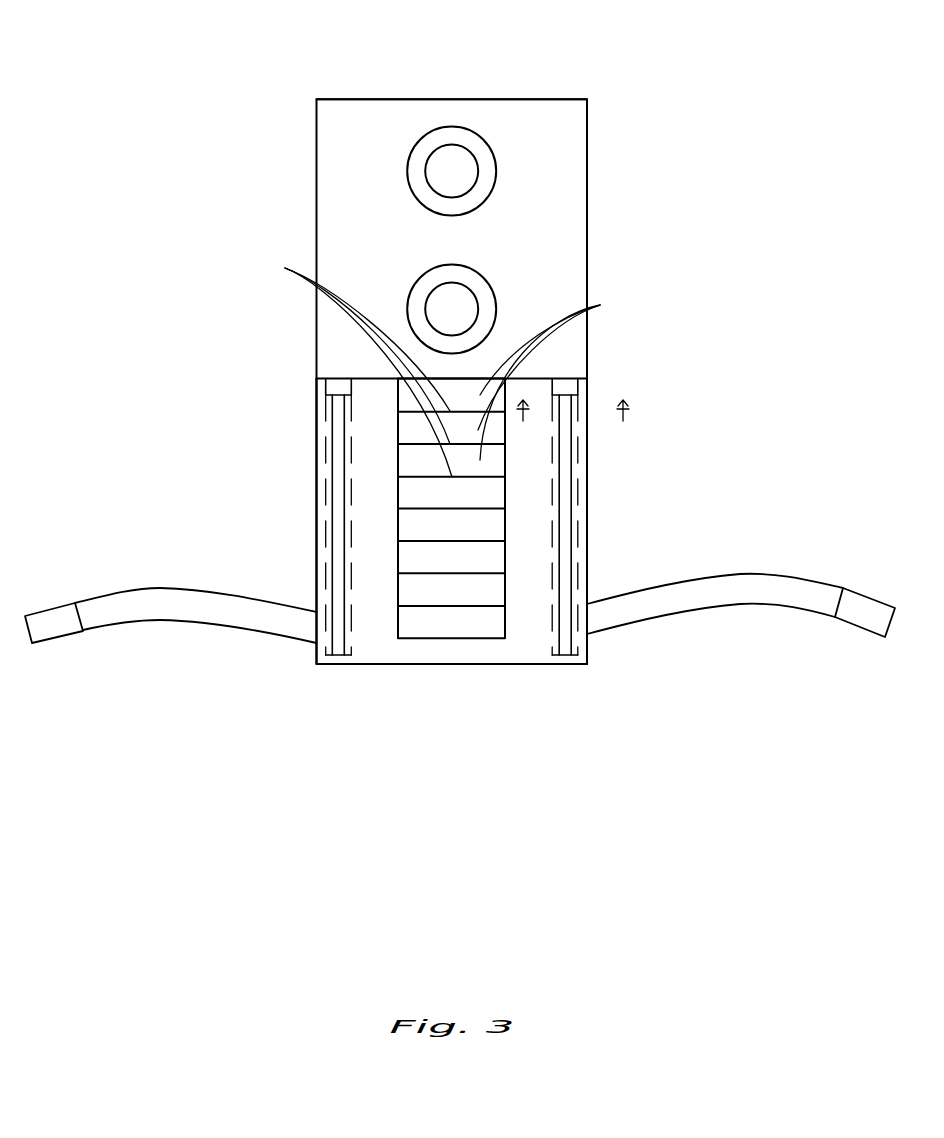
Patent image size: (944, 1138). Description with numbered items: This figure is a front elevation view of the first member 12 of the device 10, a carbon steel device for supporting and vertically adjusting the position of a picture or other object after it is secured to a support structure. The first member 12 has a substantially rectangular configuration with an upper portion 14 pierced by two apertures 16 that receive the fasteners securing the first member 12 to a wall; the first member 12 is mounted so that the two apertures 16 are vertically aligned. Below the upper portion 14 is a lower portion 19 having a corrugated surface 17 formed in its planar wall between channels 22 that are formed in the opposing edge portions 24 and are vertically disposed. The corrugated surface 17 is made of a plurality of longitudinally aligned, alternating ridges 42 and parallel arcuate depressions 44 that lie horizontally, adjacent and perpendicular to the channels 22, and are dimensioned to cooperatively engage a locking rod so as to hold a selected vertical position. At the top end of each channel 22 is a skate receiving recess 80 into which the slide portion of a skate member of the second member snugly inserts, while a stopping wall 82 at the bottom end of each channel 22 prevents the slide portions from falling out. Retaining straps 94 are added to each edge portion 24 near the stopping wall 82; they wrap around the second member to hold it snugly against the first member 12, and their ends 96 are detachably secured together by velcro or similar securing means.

The device 10 is at (584, 417).
The first member 12 is at (587, 138).
The upper portion 14 is at (338, 155).
The apertures 16 is at (453, 127).
The corrugated surface 17 is at (398, 558).
The lower portion 19 is at (587, 525).
The channels 22 is at (340, 475).
The edge portions 24 is at (316, 532).
The ridges 42 is at (285, 268).
The arcuate depressions 44 is at (600, 305).
The skate receiving recess 80 is at (330, 385).
The stopping wall 82 is at (338, 655).
The retaining straps 94 is at (187, 607).
The ends 96 is at (53, 623).